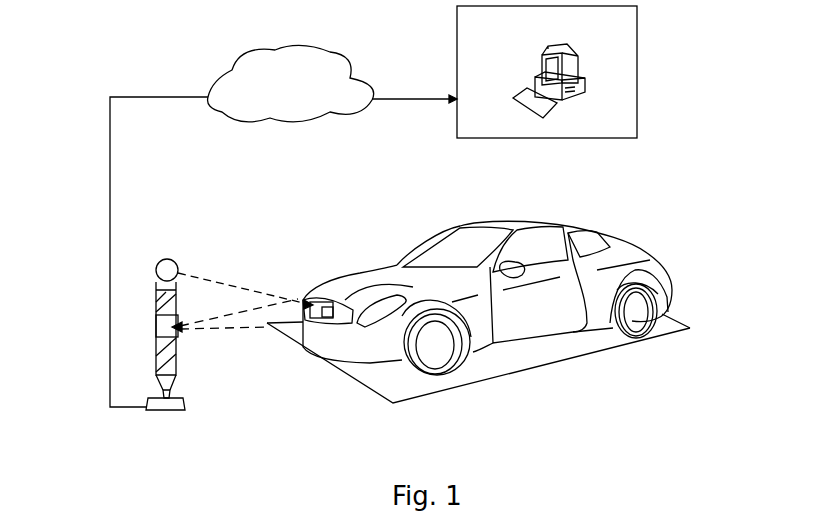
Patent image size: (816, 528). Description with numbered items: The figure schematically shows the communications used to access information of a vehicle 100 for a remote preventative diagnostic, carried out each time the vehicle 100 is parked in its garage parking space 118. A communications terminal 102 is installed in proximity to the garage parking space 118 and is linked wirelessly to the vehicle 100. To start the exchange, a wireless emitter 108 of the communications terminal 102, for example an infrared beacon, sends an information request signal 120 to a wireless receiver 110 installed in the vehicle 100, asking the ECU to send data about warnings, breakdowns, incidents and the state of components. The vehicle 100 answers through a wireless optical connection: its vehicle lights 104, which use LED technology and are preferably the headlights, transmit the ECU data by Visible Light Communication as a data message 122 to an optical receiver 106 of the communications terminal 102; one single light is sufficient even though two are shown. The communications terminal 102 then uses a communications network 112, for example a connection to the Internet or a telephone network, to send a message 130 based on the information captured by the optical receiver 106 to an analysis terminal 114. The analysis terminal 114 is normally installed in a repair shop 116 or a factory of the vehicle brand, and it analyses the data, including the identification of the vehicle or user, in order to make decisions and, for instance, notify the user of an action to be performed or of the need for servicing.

The vehicle 100 is at (620, 241).
The communications terminal 102 is at (160, 416).
The vehicle lights 104 is at (378, 322).
The optical receiver 106 is at (165, 325).
The wireless emitter 108 is at (170, 262).
The wireless receiver 110 is at (327, 310).
The communications network 112 is at (248, 64).
The analysis terminal 114 is at (575, 90).
The repair shop 116 is at (640, 52).
The garage parking space 118 is at (562, 353).
The information request signal 120 is at (245, 285).
The data message 122 is at (235, 331).
The message 130 is at (414, 88).